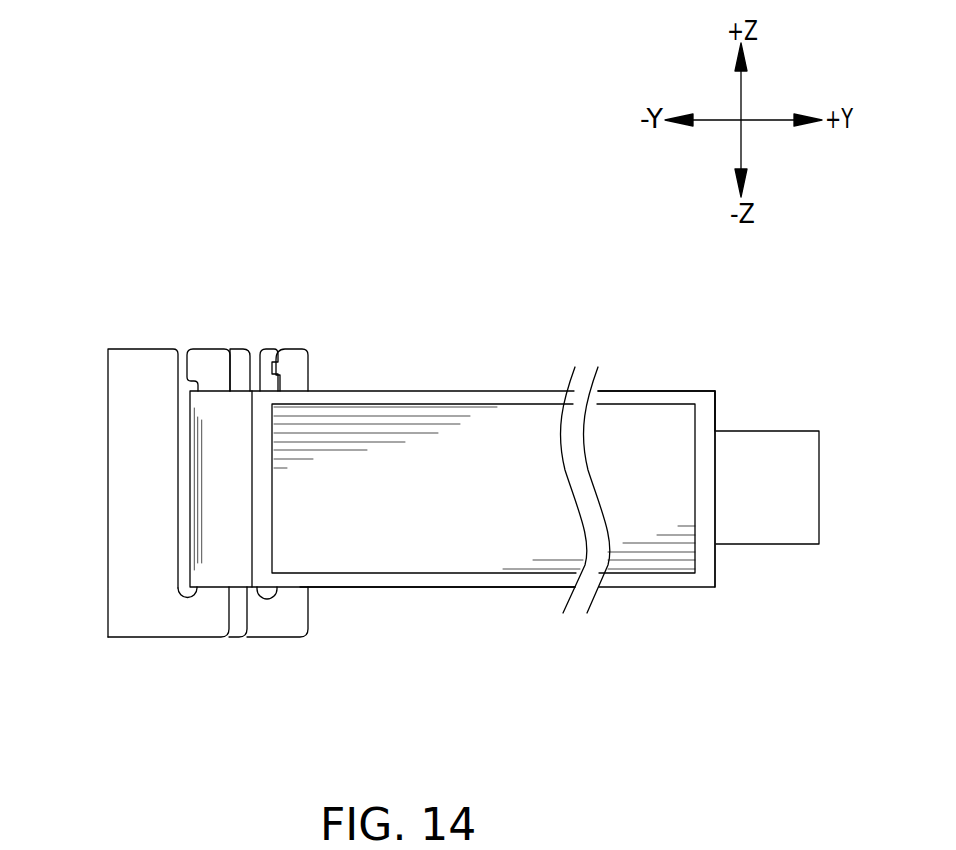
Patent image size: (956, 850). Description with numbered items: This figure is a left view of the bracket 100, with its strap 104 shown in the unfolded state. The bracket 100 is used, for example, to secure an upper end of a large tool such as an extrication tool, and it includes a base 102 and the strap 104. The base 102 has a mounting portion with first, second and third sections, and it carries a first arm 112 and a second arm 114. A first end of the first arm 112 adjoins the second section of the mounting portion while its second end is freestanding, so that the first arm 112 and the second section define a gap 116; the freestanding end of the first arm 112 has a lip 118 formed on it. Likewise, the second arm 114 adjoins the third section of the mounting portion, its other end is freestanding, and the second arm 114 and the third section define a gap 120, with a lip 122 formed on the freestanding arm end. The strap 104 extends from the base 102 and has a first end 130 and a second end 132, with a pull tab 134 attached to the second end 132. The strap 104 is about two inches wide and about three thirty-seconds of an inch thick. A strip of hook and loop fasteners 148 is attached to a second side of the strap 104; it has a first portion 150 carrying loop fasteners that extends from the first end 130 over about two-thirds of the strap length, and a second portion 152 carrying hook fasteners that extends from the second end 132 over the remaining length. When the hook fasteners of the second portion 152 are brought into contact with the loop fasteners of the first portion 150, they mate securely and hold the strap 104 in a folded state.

The bracket 100 is at (443, 280).
The base 102 is at (136, 444).
The strap 104 is at (653, 400).
The first arm 112 is at (295, 343).
The second arm 114 is at (217, 343).
The gap 116 is at (270, 590).
The lip 118 is at (260, 357).
The gap 120 is at (184, 462).
The lip 122 is at (197, 357).
The first end 130 is at (322, 390).
The second end 132 is at (720, 390).
The pull tab 134 is at (792, 523).
The strip of hook and loop fasteners 148 is at (369, 583).
The first portion 150 is at (387, 432).
The second portion 152 is at (644, 533).